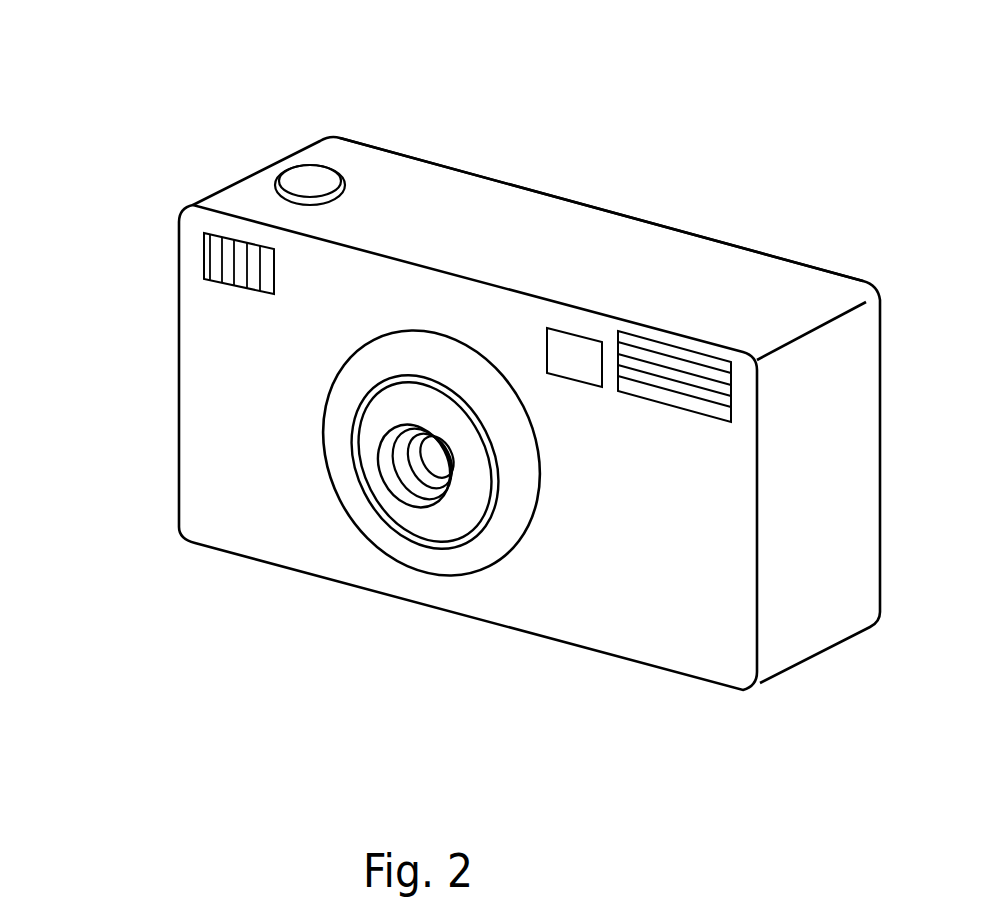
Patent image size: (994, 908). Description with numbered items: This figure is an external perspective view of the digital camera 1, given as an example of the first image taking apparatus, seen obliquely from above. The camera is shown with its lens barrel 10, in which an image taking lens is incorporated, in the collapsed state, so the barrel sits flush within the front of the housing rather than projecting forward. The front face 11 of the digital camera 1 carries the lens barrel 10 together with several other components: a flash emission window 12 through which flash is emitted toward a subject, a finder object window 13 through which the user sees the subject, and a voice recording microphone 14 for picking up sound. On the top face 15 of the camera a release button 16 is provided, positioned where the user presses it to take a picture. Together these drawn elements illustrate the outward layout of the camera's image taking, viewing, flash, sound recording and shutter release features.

The digital camera 1 is at (668, 92).
The lens barrel 10 is at (358, 542).
The front face 11 is at (633, 621).
The flash emission window 12 is at (672, 352).
The finder object window 13 is at (579, 348).
The voice recording microphone 14 is at (228, 262).
The top face 15 is at (462, 207).
The release button 16 is at (310, 178).